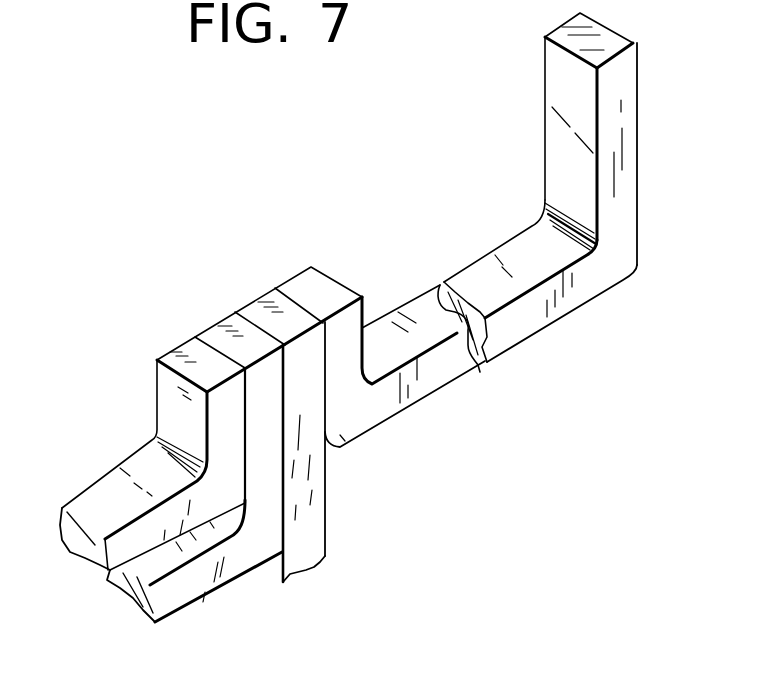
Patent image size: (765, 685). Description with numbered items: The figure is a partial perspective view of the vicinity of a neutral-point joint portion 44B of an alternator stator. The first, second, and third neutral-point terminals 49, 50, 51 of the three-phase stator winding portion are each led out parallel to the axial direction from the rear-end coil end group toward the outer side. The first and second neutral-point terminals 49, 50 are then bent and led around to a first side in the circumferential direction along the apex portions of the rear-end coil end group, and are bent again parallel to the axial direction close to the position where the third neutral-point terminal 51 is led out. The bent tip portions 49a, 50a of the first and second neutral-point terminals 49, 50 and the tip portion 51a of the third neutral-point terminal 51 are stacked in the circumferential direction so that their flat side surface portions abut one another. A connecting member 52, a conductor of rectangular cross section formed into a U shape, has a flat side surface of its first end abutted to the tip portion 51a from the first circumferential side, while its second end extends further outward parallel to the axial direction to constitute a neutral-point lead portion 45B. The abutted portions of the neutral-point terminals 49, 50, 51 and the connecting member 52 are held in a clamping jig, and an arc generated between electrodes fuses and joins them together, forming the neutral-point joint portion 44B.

The neutral-point joint portion 44B is at (252, 285).
The neutral-point lead portion 45B is at (562, 88).
The first neutral-point terminal 49 is at (121, 461).
The second neutral-point terminal 50 is at (243, 572).
The third neutral-point terminal 51 is at (330, 520).
The connecting member 52 is at (500, 240).
The bent tip portion of first neutral-point terminal 49a is at (233, 390).
The bent tip portion of second neutral-point terminal 50a is at (265, 367).
The tip portion of third neutral-point terminal 51a is at (302, 345).